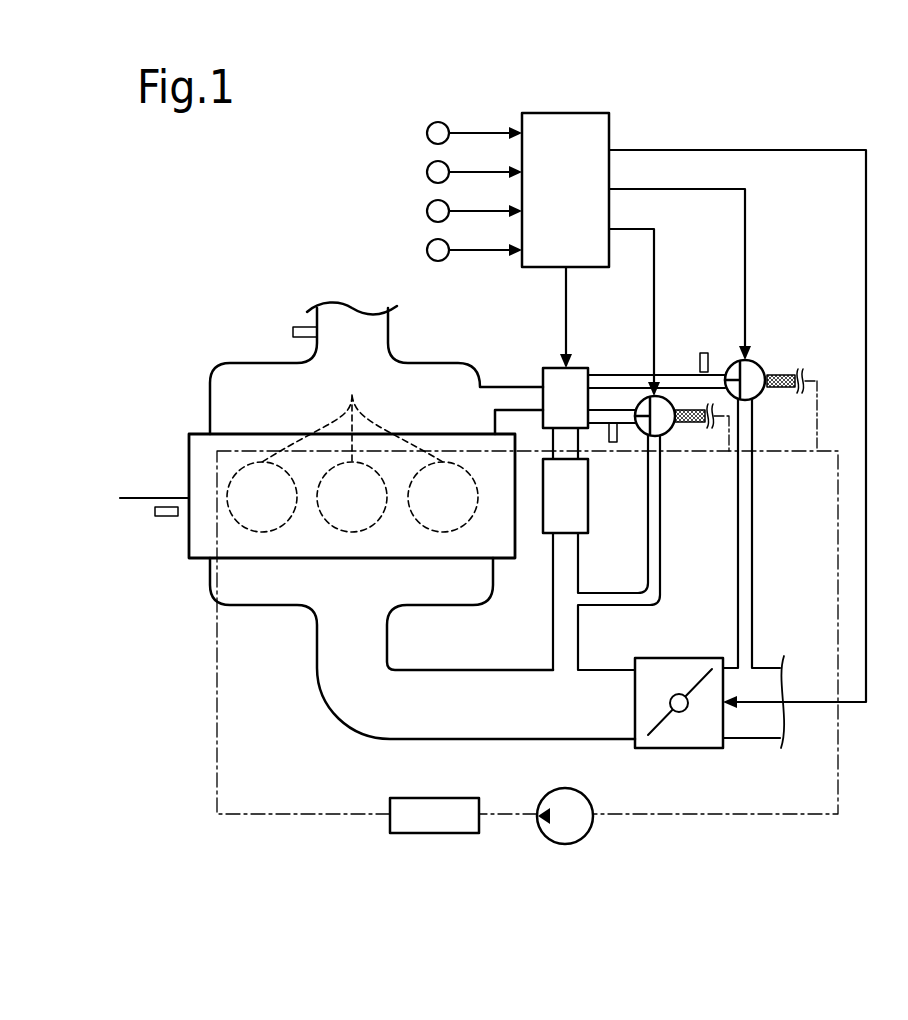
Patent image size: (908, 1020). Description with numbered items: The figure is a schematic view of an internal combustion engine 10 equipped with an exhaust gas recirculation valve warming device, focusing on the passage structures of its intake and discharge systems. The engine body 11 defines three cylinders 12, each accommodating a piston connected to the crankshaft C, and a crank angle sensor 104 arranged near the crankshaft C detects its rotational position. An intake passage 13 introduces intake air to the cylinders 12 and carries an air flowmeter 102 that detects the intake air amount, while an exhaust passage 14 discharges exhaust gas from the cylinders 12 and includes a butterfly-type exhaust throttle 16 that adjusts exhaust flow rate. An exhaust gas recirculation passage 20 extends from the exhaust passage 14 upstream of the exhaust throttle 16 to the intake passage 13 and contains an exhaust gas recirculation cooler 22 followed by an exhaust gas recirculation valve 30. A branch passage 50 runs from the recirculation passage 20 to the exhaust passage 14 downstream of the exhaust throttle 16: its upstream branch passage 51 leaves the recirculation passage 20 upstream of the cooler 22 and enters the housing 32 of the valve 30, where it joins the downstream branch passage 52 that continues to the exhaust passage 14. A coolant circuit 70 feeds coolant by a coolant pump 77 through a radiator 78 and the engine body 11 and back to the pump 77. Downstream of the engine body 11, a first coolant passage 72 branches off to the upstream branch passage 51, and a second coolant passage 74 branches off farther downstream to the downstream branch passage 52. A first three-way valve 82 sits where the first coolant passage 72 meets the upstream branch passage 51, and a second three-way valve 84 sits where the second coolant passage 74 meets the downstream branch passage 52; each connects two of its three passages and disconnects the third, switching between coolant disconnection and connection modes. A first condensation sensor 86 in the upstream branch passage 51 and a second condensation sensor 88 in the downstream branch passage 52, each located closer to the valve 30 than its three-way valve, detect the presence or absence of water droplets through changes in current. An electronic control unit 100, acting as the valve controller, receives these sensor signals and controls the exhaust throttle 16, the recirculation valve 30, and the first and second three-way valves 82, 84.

The internal combustion engine 10 is at (207, 249).
The engine body 11 is at (189, 455).
The cylinders 12 is at (352, 449).
The intake passage 13 is at (256, 362).
The exhaust passage 14 is at (317, 643).
The exhaust throttle 16 is at (661, 749).
The exhaust gas recirculation passage 20 is at (553, 628).
The exhaust gas recirculation cooler 22 is at (588, 512).
The exhaust gas recirculation valve 30 is at (510, 378).
The housing 32 is at (541, 364).
The branch passage 50 is at (700, 574).
The upstream branch passage 51 is at (660, 487).
The downstream branch passage 52 is at (752, 487).
The coolant circuit 70 is at (807, 815).
The first coolant passage 72 is at (686, 408).
The second coolant passage 74 is at (778, 373).
The coolant pump 77 is at (566, 789).
The radiator 78 is at (438, 797).
The first three-way valve 82 is at (639, 400).
The second three-way valve 84 is at (762, 360).
The first condensation sensor 86 is at (427, 133).
The second condensation sensor 88 is at (427, 172).
The electronic control unit 100 is at (611, 122).
The air flowmeter 102 is at (427, 211).
The crank angle sensor 104 is at (427, 250).
The crankshaft C is at (148, 498).